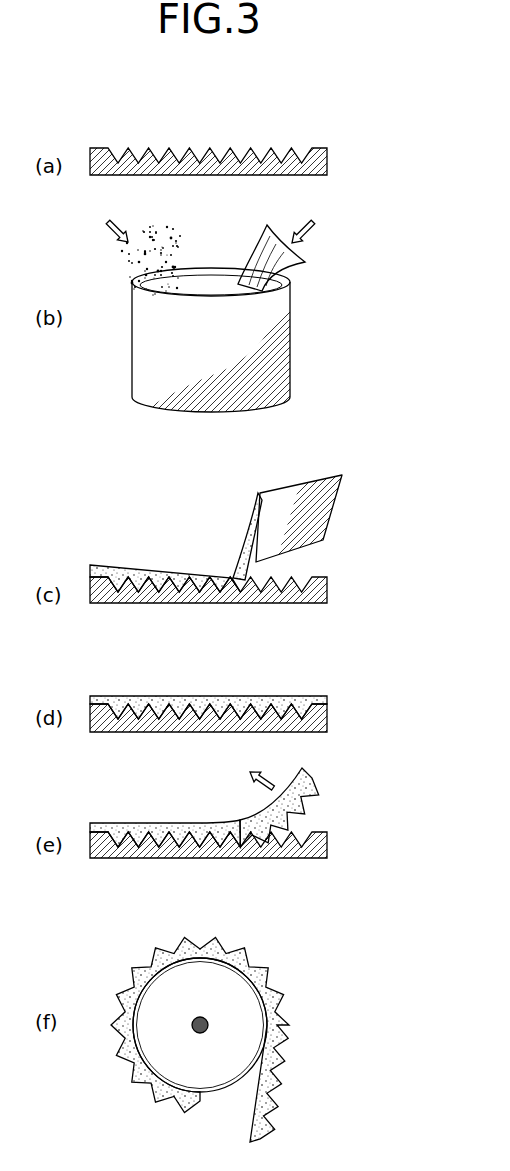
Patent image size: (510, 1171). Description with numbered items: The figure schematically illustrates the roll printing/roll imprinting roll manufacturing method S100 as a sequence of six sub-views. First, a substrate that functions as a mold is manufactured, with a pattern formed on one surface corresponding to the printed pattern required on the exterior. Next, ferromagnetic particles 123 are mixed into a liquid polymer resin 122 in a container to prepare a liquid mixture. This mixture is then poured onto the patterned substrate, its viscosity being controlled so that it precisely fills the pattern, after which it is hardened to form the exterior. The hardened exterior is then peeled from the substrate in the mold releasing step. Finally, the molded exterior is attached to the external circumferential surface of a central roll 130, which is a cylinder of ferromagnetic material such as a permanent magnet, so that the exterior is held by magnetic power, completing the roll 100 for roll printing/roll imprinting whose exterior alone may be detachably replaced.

The roll printing/roll imprinting roll manufacturing method S100 is at (372, 118).
The liquid polymer resin 122 is at (245, 252).
The ferromagnetic particles 123 is at (190, 252).
The roll for roll printing/roll imprinting 100 is at (290, 956).
The central roll 130 is at (204, 1093).